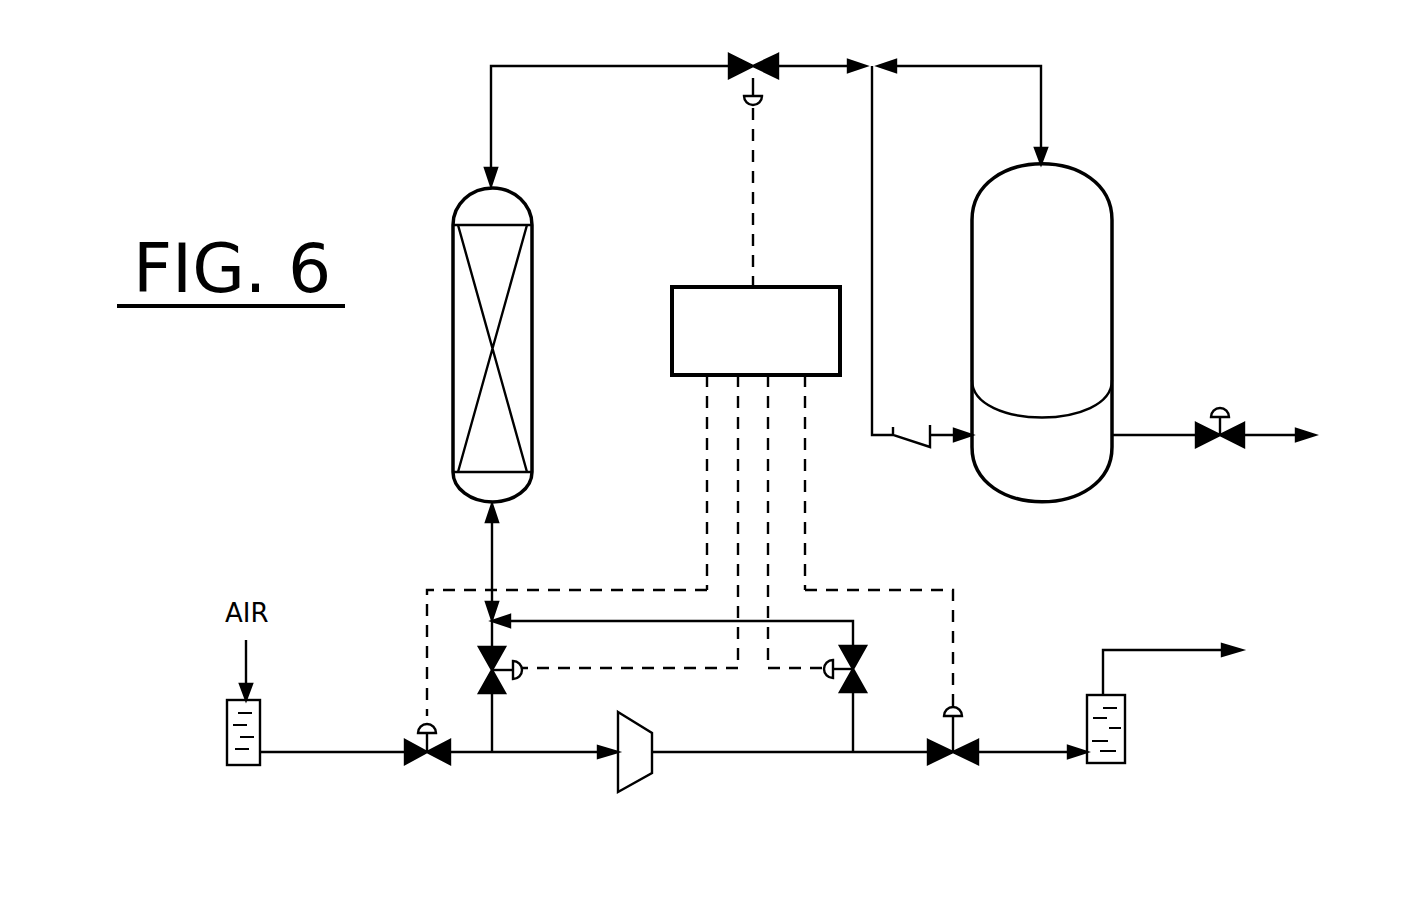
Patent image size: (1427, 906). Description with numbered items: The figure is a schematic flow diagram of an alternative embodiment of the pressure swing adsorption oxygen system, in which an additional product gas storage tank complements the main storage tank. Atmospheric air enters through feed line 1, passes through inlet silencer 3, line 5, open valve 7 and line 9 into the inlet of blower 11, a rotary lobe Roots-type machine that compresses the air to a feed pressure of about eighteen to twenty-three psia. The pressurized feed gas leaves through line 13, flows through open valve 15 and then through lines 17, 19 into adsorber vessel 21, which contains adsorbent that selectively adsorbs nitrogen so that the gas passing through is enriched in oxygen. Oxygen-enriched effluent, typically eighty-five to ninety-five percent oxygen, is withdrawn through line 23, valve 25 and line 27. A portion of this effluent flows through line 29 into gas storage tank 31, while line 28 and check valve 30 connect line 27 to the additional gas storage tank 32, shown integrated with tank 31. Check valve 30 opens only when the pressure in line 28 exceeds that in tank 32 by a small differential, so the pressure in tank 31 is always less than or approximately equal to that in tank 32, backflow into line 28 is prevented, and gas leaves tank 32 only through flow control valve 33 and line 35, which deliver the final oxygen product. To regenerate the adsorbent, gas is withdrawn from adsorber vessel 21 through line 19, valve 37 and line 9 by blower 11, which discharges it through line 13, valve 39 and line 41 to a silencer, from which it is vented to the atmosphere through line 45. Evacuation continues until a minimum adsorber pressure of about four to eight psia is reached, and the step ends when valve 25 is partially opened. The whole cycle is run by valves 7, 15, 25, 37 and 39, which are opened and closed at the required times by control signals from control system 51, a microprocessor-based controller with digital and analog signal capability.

The feed line 1 is at (246, 648).
The inlet silencer 3 is at (227, 738).
The line 5 is at (312, 752).
The valve 7 is at (428, 768).
The line 9 is at (549, 752).
The blower 11 is at (640, 778).
The line 13 is at (754, 752).
The valve 15 is at (868, 666).
The line 17 is at (672, 637).
The line 19 is at (494, 580).
The adsorber vessel 21 is at (453, 362).
The line 23 is at (491, 146).
The valve 25 is at (762, 56).
The line 27 is at (816, 68).
The line 28 is at (873, 245).
The line 29 is at (1043, 108).
The check valve 30 is at (893, 447).
The gas storage tank 31 is at (1058, 354).
The additional product gas storage tank 32 is at (998, 492).
The flow control valve 33 is at (1212, 447).
The line 35 is at (1268, 435).
The valve 37 is at (500, 692).
The valve 39 is at (948, 766).
The line 41 is at (1030, 752).
The line 45 is at (1178, 650).
The control system 51 is at (717, 287).